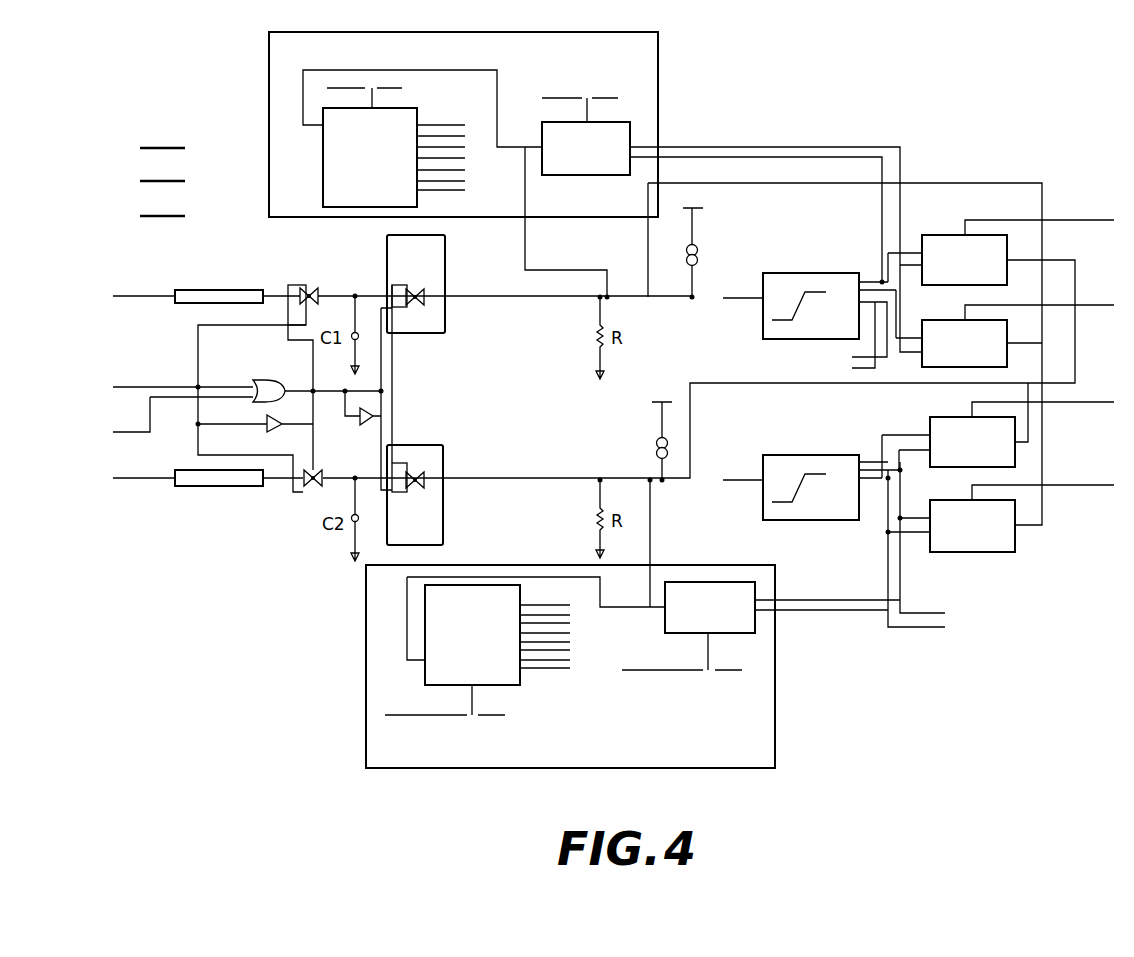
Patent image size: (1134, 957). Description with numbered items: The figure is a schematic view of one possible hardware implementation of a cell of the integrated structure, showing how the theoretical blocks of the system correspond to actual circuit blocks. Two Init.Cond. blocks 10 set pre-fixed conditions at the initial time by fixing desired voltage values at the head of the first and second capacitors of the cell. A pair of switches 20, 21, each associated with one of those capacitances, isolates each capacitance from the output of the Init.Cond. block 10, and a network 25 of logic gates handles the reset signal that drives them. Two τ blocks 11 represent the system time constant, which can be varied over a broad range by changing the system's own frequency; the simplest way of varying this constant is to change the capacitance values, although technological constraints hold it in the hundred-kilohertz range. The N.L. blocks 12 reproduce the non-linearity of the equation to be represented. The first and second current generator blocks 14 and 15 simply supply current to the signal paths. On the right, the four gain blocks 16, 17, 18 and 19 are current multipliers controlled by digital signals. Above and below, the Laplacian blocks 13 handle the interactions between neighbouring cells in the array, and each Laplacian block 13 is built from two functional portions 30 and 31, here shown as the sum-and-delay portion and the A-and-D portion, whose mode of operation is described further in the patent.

The Init.Cond. block 10 is at (190, 303).
The τ block 11 is at (445, 313).
The N.L. block 12 is at (811, 273).
The Laplacian block 13 is at (657, 73).
The i1 block 14 is at (700, 248).
The i2 block 15 is at (656, 440).
The 1+μ+ε block 16 is at (1007, 357).
The 1+μ−ε block 17 is at (1015, 450).
The s1 block 18 is at (1007, 248).
The s2 block 19 is at (1015, 538).
The switch 20 is at (317, 290).
The switch 21 is at (320, 490).
The network of logic gates 25 is at (319, 411).
The functional portion 30 is at (323, 155).
The functional portion 31 is at (630, 133).